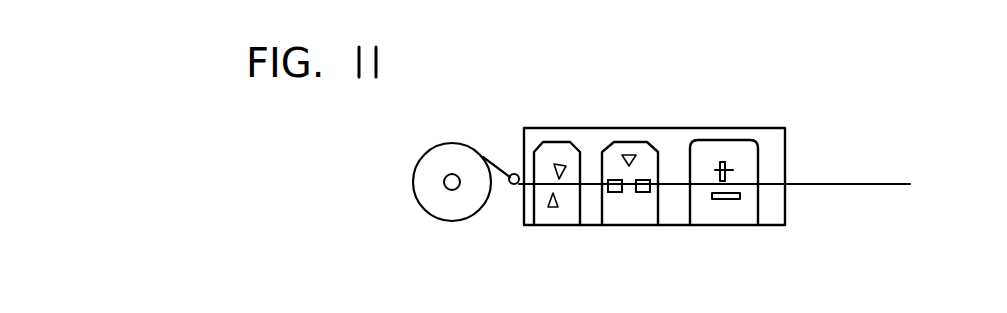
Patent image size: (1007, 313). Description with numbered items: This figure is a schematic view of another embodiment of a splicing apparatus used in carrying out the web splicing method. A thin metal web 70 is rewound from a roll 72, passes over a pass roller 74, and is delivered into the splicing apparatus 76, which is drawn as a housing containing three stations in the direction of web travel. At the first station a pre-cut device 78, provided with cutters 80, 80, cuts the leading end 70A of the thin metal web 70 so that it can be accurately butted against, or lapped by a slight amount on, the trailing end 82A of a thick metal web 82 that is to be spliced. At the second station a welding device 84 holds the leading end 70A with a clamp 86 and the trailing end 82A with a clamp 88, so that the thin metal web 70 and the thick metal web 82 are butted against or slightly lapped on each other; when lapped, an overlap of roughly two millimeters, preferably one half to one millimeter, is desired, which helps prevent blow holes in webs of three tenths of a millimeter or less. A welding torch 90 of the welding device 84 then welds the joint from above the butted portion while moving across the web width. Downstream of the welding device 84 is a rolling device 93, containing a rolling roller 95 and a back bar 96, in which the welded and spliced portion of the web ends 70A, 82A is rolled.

The thin metal web 70 is at (497, 150).
The leading end of the thin metal web 70A is at (618, 192).
The roll 72 is at (455, 218).
The pass roller 74 is at (513, 186).
The splicing apparatus 76 is at (522, 118).
The pre-cut device 78 is at (553, 142).
The cutters 80 is at (561, 165).
The thick metal web 82 is at (853, 184).
The trailing end of the thick metal web 82A is at (645, 192).
The welding device 84 is at (631, 142).
The clamp 86 is at (612, 192).
The clamp 88 is at (650, 181).
The welding torch 90 is at (634, 153).
The rolling device 93 is at (730, 140).
The rolling roller 95 is at (728, 162).
The back bar 96 is at (735, 199).